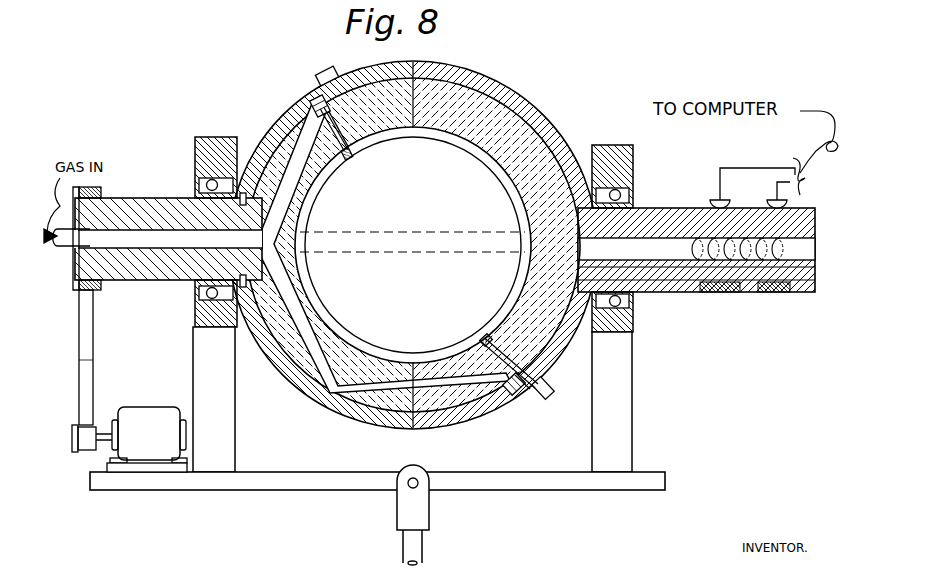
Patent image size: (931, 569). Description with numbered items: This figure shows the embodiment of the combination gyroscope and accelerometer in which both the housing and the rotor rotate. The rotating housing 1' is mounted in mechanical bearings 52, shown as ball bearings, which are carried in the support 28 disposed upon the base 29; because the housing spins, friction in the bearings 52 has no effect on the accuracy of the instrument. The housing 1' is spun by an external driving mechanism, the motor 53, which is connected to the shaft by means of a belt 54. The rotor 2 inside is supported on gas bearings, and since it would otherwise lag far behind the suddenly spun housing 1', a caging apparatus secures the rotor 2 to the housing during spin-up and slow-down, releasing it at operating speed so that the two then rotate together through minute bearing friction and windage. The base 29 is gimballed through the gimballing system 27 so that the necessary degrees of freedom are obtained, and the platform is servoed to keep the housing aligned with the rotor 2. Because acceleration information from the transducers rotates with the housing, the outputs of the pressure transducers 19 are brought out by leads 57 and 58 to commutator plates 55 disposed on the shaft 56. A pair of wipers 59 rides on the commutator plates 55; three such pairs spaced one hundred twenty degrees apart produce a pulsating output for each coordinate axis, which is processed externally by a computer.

The rotating housing 1' is at (413, 240).
The rotor 2 is at (522, 112).
The pressure transducers 19 is at (322, 71).
The gimballing system 27 is at (428, 516).
The support 28 is at (236, 433).
The base 29 is at (213, 490).
The mechanical bearings 52 is at (201, 182).
The motor 53 is at (165, 410).
The belt 54 is at (95, 323).
The commutator plates 55 is at (760, 294).
The shaft 56 is at (683, 209).
The lead 57 is at (560, 140).
The lead 58 is at (553, 336).
The wipers 59 is at (770, 203).